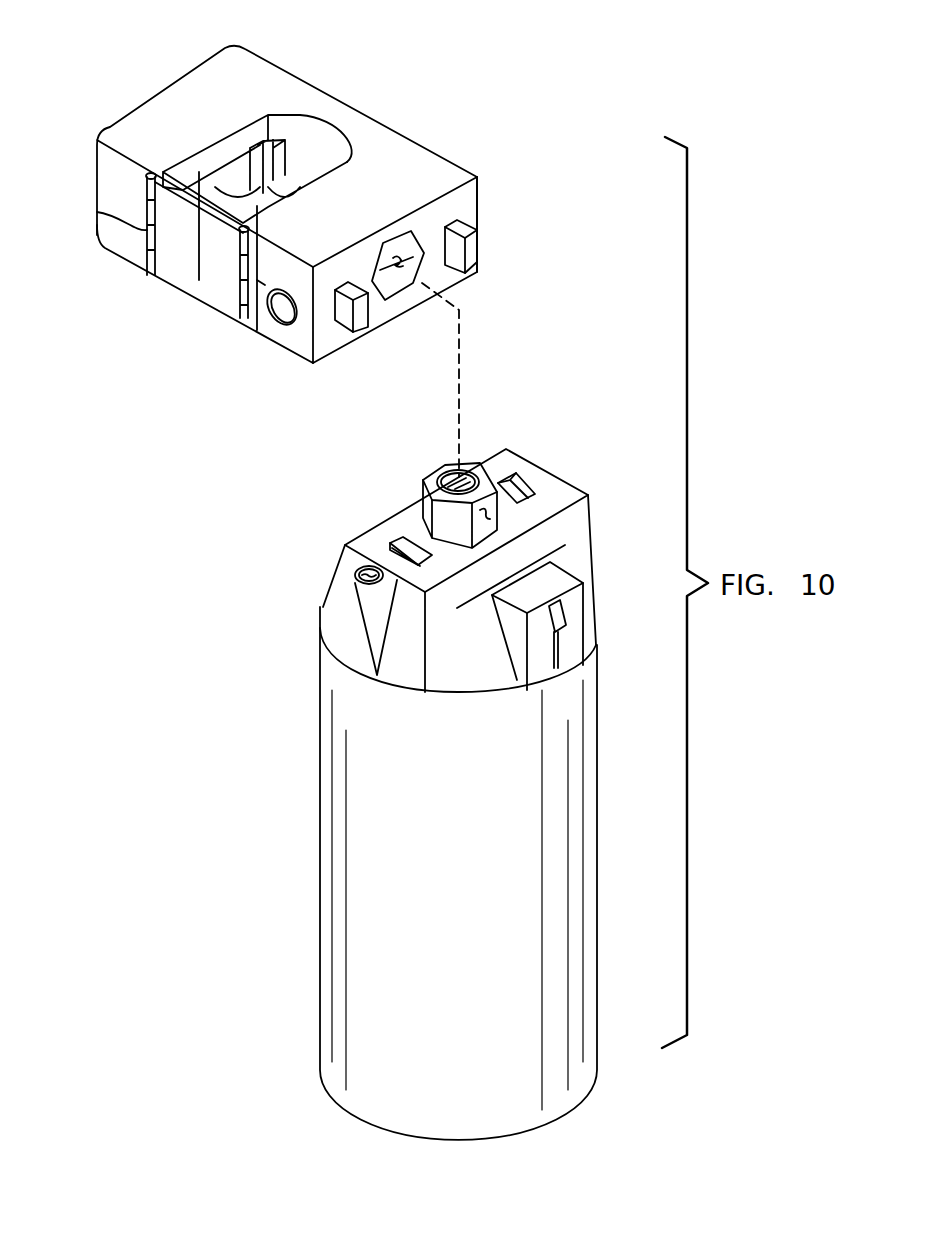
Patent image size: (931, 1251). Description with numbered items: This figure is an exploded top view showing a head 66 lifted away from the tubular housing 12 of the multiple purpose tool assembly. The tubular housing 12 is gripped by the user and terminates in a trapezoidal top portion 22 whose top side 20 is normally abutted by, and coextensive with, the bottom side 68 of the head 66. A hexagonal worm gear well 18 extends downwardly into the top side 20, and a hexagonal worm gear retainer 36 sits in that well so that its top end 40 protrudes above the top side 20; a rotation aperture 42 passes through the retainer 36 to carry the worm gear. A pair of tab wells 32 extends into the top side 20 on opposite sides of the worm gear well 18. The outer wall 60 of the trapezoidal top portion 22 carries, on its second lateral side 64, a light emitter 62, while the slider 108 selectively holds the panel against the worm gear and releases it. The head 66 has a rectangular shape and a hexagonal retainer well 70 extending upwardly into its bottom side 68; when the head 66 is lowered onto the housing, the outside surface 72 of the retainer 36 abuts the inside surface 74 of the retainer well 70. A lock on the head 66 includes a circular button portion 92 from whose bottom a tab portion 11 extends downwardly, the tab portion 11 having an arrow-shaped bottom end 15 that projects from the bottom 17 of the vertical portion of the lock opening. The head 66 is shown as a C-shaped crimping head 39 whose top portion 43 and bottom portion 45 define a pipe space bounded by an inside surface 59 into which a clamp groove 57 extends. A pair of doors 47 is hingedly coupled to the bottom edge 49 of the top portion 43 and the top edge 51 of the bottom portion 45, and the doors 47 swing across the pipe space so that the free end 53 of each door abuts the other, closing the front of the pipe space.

The tab portion 11 is at (335, 318).
The tubular housing 12 is at (302, 862).
The bottom end 15 is at (520, 292).
The bottom 17 is at (340, 308).
The hexagonal worm gear well 18 is at (443, 537).
The top side 20 is at (385, 530).
The trapezoidal top portion 22 is at (300, 612).
The tab wells 32 is at (507, 470).
The worm gear retainer 36 is at (443, 465).
The crimping head 39 is at (105, 117).
The top end 40 is at (478, 462).
The rotation aperture 42 is at (447, 463).
The top portion 43 is at (88, 255).
The bottom portion 45 is at (255, 292).
The doors 47 is at (177, 277).
The bottom edge 49 is at (97, 212).
The top edge 51 is at (238, 282).
The free end 53 is at (243, 227).
The clamp groove 57 is at (317, 147).
The inside surface 59 is at (258, 134).
The outer wall 60 is at (580, 550).
The light emitter 62 is at (353, 572).
The second lateral side 64 is at (400, 673).
The head 66 is at (372, 80).
The bottom side 68 is at (540, 160).
The hexagonal retainer well 70 is at (400, 265).
The outside surface 72 is at (485, 518).
The inside surface 74 is at (393, 267).
The button portion 92 is at (268, 322).
The slider 108 is at (568, 614).